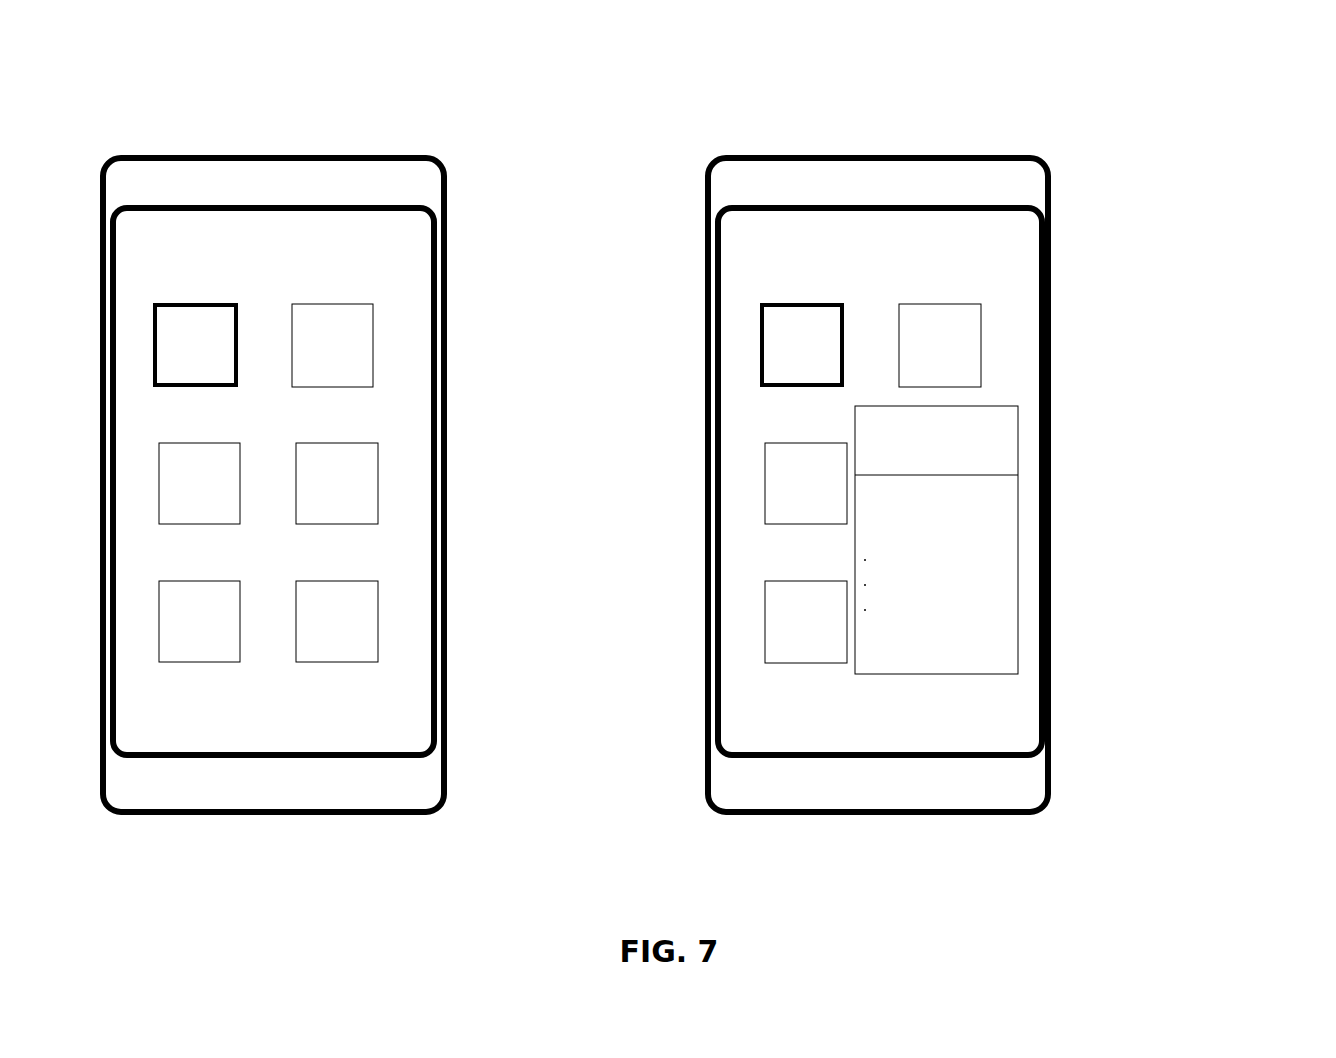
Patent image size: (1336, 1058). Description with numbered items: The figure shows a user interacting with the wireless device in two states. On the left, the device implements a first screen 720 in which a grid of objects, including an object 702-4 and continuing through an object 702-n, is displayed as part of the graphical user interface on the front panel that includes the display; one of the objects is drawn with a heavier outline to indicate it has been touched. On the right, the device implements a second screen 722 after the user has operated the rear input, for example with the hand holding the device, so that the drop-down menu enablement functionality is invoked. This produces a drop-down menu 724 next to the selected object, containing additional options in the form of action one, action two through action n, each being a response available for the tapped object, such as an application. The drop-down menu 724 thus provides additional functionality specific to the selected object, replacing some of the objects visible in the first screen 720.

The object 702-4 is at (337, 483).
The object 702-n is at (337, 621).
The first screen 720 is at (388, 456).
The second screen 722 is at (997, 459).
The drop-down menu 724 is at (1019, 486).